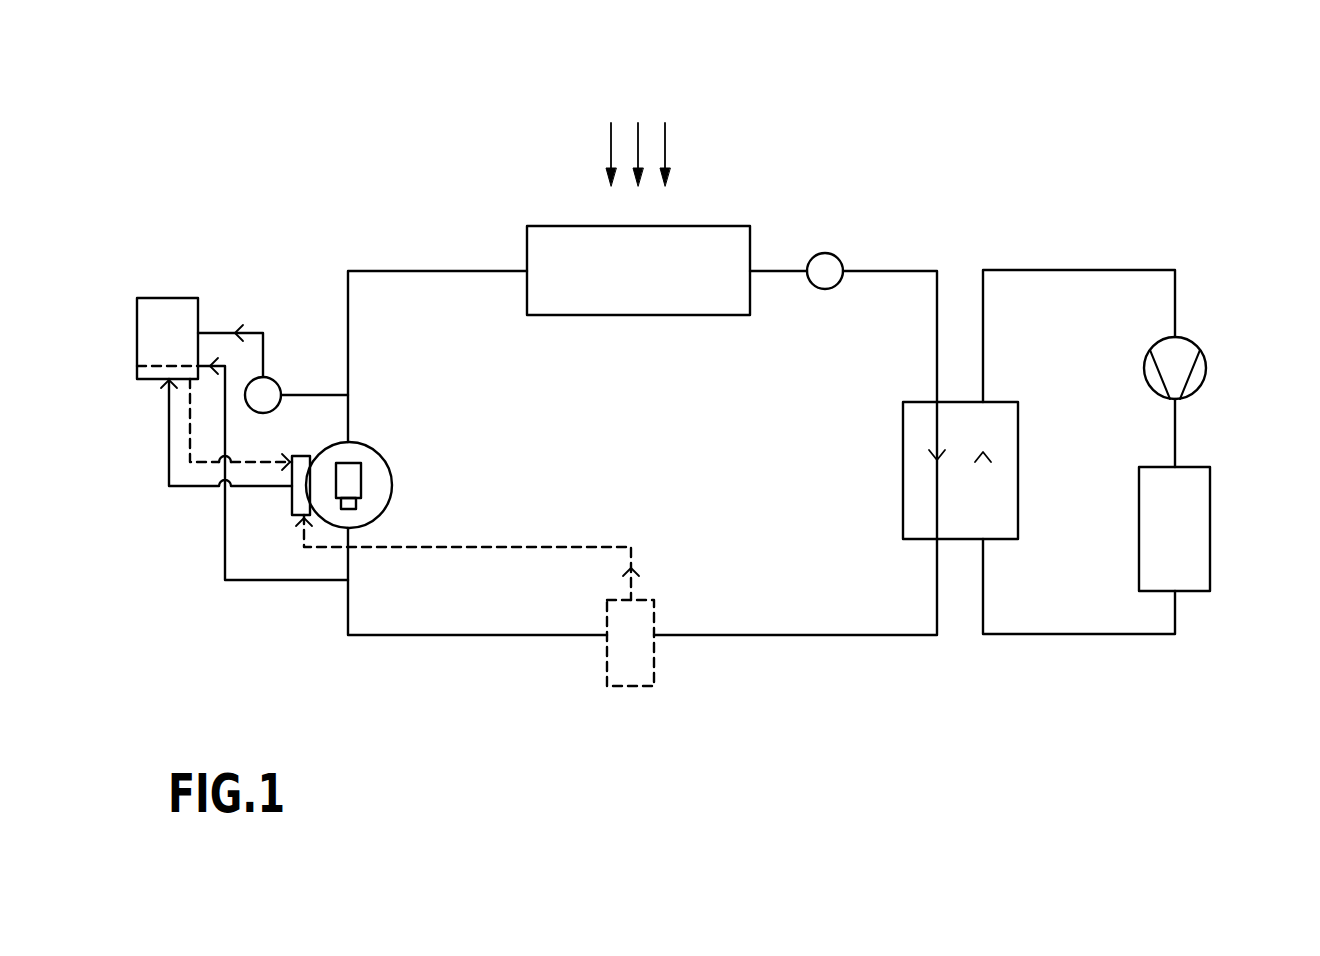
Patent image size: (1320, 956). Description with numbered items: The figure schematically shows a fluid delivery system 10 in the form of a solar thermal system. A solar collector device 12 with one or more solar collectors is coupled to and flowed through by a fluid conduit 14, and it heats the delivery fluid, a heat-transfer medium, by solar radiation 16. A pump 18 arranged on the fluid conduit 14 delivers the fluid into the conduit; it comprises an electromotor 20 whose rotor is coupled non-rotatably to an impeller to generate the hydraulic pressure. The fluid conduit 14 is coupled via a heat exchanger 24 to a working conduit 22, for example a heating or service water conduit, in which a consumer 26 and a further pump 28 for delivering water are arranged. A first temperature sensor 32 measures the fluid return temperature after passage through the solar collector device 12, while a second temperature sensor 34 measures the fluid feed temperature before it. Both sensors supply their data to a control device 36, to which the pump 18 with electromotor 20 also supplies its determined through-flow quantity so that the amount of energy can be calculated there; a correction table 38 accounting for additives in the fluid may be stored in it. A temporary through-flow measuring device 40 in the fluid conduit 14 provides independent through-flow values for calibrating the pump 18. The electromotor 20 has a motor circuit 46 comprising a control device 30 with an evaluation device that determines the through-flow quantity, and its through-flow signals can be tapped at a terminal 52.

The fluid delivery system 10 is at (810, 166).
The solar collector device 12 is at (600, 300).
The fluid conduit 14 is at (741, 645).
The solar radiation 16 is at (665, 140).
The pump 18 is at (392, 495).
The electromotor 20 is at (352, 482).
The working conduit 22 is at (1055, 645).
The heat exchanger 24 is at (910, 540).
The consumer 26 is at (1196, 549).
The pump 28 is at (1196, 372).
The control device 30 is at (356, 505).
The first temperature sensor 32 is at (830, 254).
The second temperature sensor 34 is at (272, 377).
The control device 36 is at (174, 315).
The correction table 38 is at (158, 372).
The through-flow measuring device 40 is at (630, 668).
The motor circuit 46 is at (300, 467).
The terminal 52 is at (275, 487).